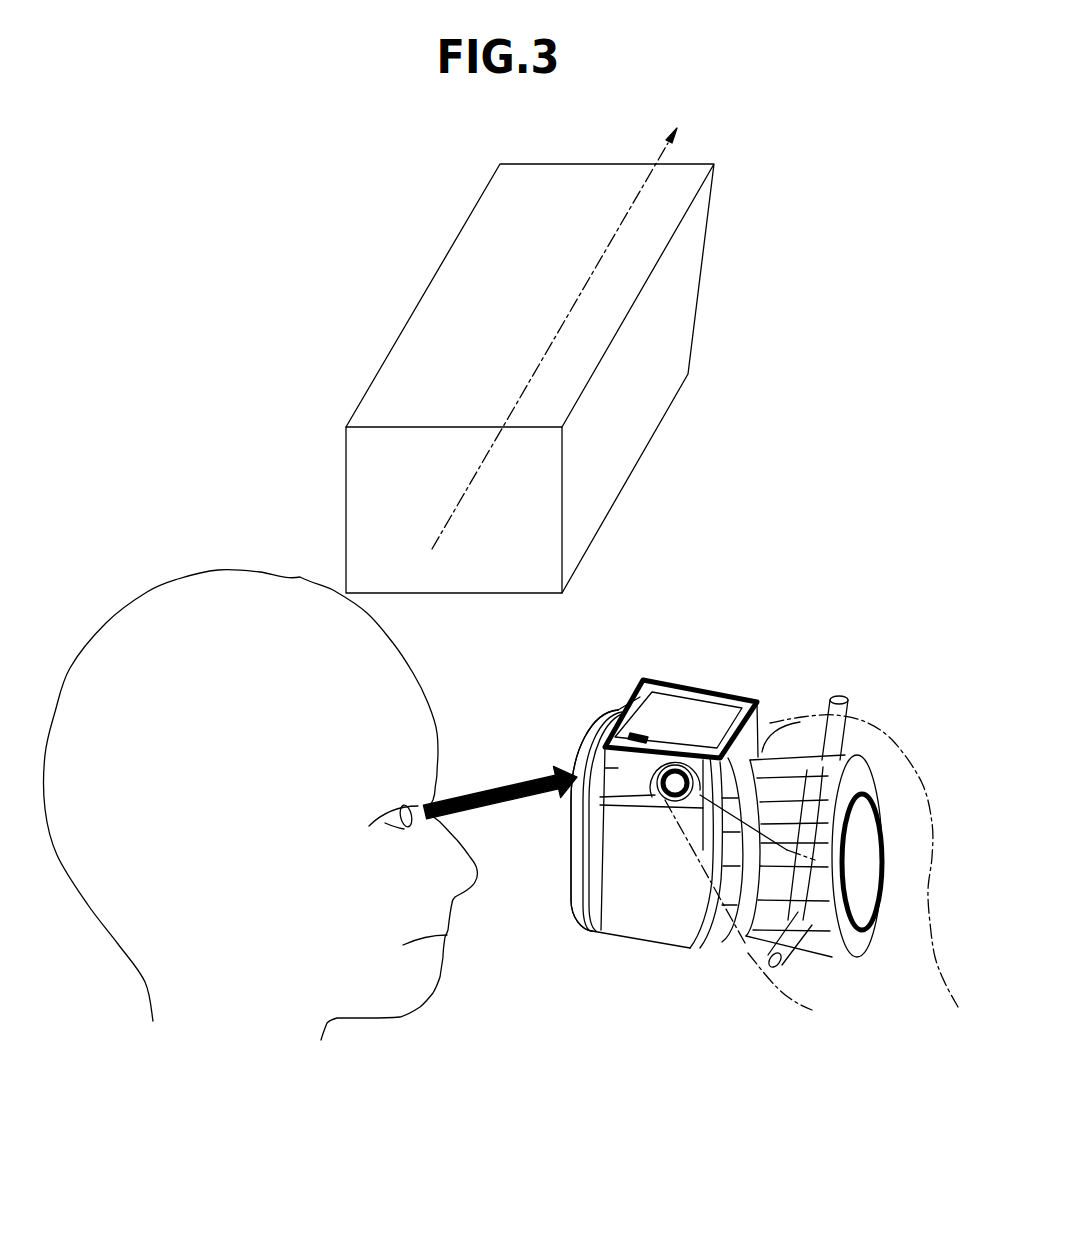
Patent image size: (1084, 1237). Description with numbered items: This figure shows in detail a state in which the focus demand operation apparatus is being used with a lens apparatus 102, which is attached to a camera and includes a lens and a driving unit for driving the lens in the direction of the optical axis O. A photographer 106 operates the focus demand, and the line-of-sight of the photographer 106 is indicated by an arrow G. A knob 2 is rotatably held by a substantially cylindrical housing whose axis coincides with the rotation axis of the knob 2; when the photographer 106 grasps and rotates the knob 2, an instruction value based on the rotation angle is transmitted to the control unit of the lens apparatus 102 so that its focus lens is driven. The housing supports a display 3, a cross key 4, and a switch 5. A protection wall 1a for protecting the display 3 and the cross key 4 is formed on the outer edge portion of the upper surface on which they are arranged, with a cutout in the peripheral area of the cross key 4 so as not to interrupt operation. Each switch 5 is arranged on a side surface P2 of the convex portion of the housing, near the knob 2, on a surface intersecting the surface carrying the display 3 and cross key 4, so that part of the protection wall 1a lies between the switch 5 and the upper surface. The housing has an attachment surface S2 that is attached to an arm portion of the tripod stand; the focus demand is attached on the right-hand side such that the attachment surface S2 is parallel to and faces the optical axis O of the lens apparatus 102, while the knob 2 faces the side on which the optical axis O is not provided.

The lens apparatus 102 is at (343, 392).
The photographer 106 is at (130, 580).
The protection wall 1a is at (728, 697).
The knob 2 is at (792, 788).
The display 3 is at (681, 718).
The cross key 4 is at (640, 737).
The switch 5 is at (668, 801).
The side surface P2 is at (622, 767).
The attachment surface S2 is at (572, 917).
The arrow indicating line-of-sight G is at (500, 789).
The optical axis O is at (554, 338).